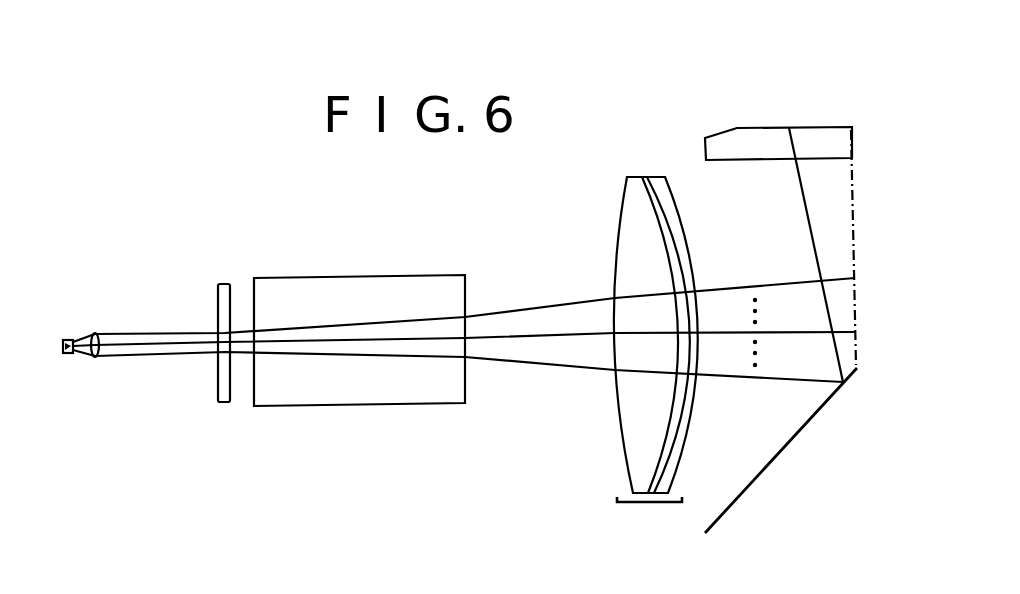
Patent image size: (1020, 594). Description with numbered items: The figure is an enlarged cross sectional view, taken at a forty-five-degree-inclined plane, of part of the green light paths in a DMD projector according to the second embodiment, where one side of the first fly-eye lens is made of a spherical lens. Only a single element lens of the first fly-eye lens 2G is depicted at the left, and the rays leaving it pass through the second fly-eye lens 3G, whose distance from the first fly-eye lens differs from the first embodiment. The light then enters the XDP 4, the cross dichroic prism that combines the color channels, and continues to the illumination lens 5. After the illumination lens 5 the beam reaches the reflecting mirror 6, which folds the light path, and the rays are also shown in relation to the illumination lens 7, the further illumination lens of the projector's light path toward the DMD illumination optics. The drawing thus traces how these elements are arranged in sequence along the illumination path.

The first fly-eye lens 2G is at (100, 357).
The second fly-eye lens 3G is at (224, 402).
The XDP 4 is at (413, 404).
The illumination lens 5 is at (648, 507).
The reflecting mirror 6 is at (753, 483).
The illumination lens 7 is at (768, 127).